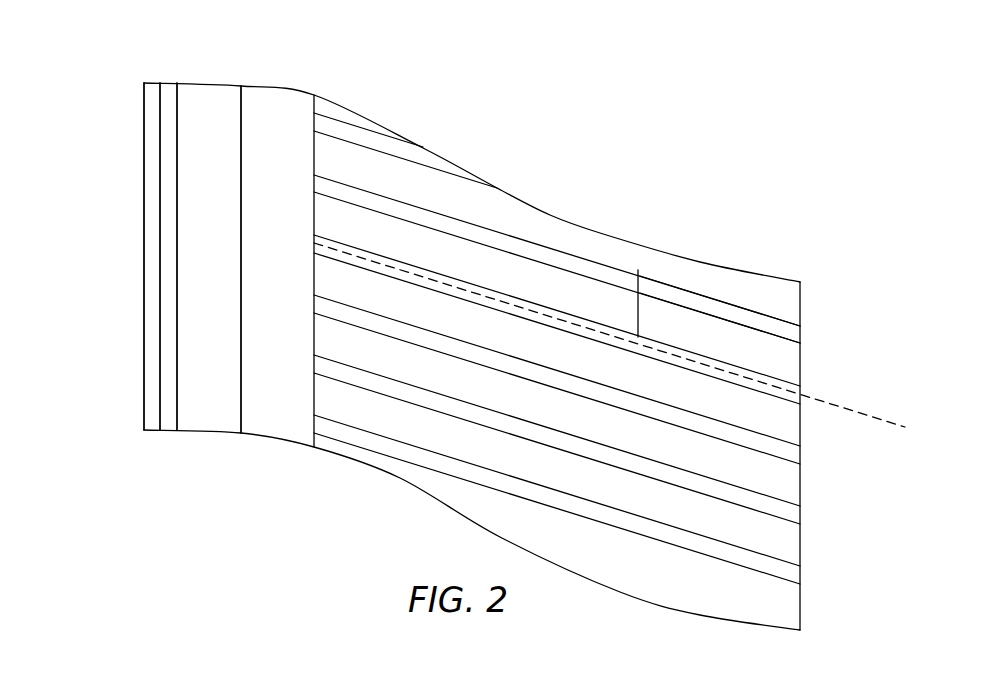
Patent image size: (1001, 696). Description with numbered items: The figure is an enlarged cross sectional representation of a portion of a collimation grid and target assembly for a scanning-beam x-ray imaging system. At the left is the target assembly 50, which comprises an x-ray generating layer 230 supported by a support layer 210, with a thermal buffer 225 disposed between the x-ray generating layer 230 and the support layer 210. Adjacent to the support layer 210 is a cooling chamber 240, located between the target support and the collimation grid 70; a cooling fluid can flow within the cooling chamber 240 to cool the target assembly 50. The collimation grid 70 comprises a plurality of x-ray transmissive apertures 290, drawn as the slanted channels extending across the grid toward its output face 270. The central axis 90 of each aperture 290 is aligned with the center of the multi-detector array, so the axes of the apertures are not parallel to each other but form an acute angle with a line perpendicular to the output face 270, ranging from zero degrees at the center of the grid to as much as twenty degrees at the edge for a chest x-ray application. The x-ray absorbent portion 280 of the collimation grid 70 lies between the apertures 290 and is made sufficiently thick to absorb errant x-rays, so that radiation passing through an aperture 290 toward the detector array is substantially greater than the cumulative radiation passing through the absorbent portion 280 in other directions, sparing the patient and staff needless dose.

The target assembly 50 is at (124, 193).
The collimation grid 70 is at (624, 593).
The central axis 90 is at (860, 415).
The support layer 210 is at (215, 435).
The thermal buffer 225 is at (168, 82).
The x-ray generating layer 230 is at (151, 82).
The cooling chamber 240 is at (282, 440).
The output face 270 is at (815, 480).
The x-ray absorbent portion 280 is at (682, 332).
The x-ray transmissive aperture 290 is at (622, 268).